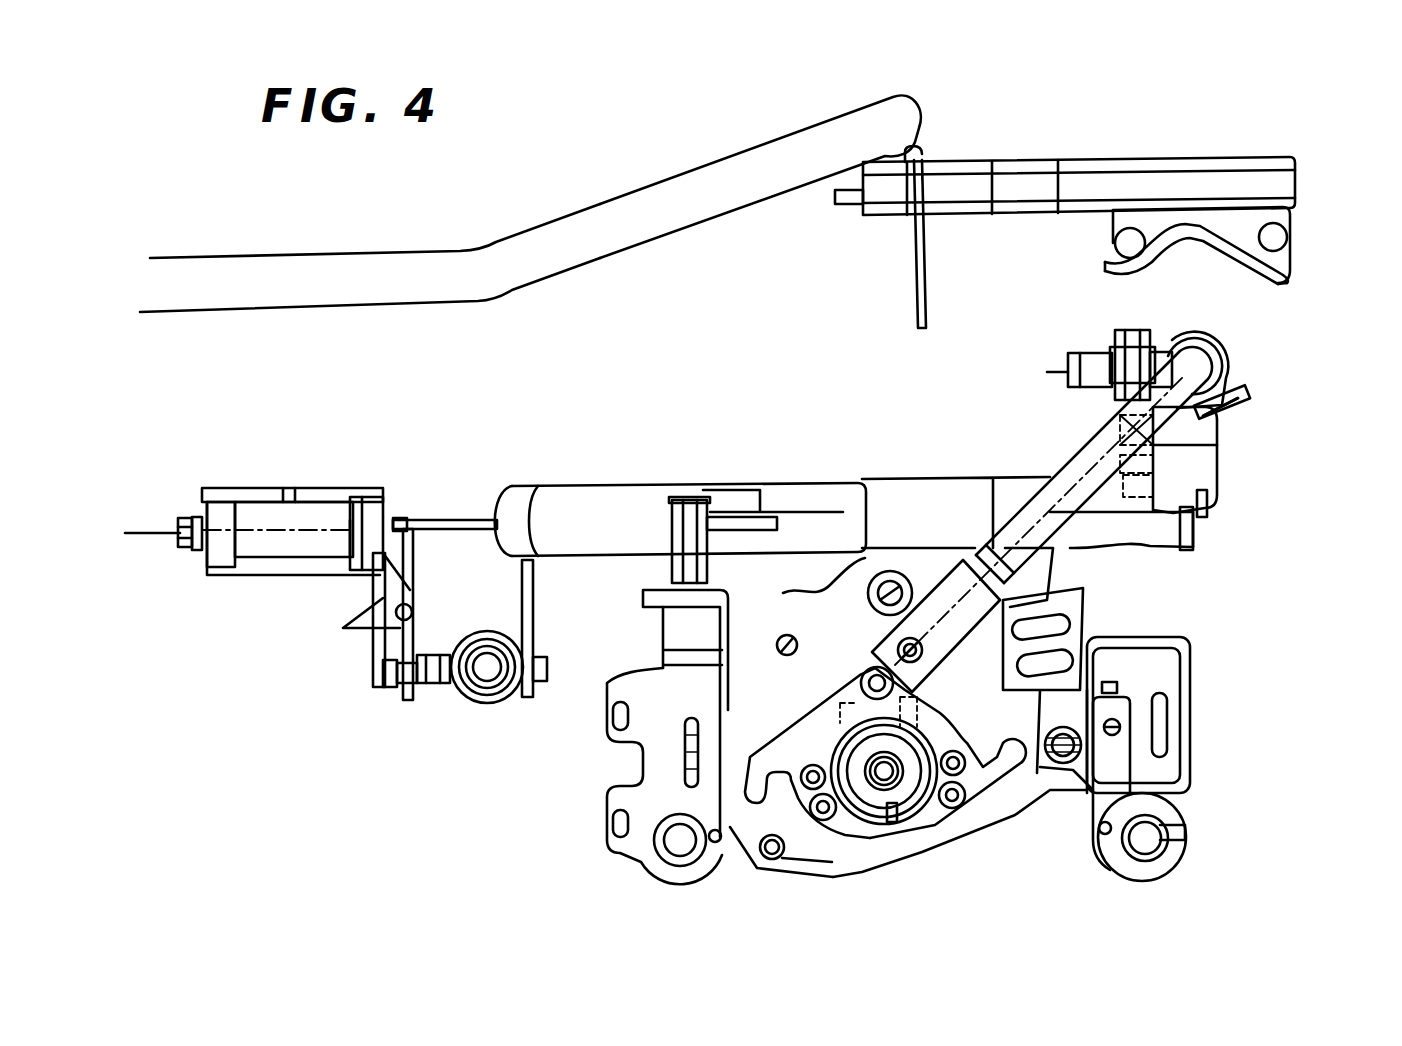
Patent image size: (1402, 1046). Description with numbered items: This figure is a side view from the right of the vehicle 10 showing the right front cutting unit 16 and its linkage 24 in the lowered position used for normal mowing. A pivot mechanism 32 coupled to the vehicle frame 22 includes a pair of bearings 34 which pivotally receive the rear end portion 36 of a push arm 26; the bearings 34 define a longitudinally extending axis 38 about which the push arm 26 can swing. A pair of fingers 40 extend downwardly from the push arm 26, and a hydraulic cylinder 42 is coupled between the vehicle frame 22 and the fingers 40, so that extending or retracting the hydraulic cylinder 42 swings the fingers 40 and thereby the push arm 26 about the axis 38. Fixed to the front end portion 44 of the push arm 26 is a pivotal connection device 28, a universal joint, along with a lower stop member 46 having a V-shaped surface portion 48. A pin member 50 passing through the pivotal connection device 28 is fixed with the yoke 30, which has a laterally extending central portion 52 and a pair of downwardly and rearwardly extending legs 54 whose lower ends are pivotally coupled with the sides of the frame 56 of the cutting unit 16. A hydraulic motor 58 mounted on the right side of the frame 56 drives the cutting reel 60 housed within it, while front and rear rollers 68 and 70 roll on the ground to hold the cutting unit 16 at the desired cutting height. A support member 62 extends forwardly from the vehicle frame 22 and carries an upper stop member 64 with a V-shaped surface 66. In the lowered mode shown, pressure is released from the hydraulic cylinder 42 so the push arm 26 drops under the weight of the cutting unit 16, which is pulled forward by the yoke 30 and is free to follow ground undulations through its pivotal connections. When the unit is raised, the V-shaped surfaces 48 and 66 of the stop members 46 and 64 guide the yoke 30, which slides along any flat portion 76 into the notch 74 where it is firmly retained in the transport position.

The vehicle 10 is at (286, 236).
The vehicle frame 22 is at (768, 146).
The support member 62 is at (1030, 162).
The upper stop member 64 is at (1278, 264).
The flat portion 76 is at (1118, 262).
The V-shaped surface 66 is at (1203, 248).
The notch 74 is at (1180, 243).
The push arm 26 is at (611, 470).
The front end portion 44 is at (1020, 476).
The legs 54 is at (1063, 557).
The linkage 24 is at (982, 398).
The yoke 30 is at (1087, 430).
The central portion 52 is at (1195, 350).
The lower stop member 46 is at (1246, 400).
The V-shaped surface portion 48 is at (1245, 385).
The pivotal connection device 28 is at (1122, 326).
The pin member 50 is at (1080, 352).
The frame 56 is at (792, 704).
The hydraulic motor 58 is at (865, 823).
The cutting reel 60 is at (960, 850).
The rear roller 70 is at (703, 873).
The right front cutting unit 16 is at (1190, 645).
The front roller 68 is at (1178, 857).
The axis 38 is at (140, 532).
The pivot mechanism 32 is at (314, 469).
The bearings 34 is at (222, 560).
The rear end portion 36 is at (394, 515).
The fingers 40 is at (413, 643).
The hydraulic cylinder 42 is at (493, 705).